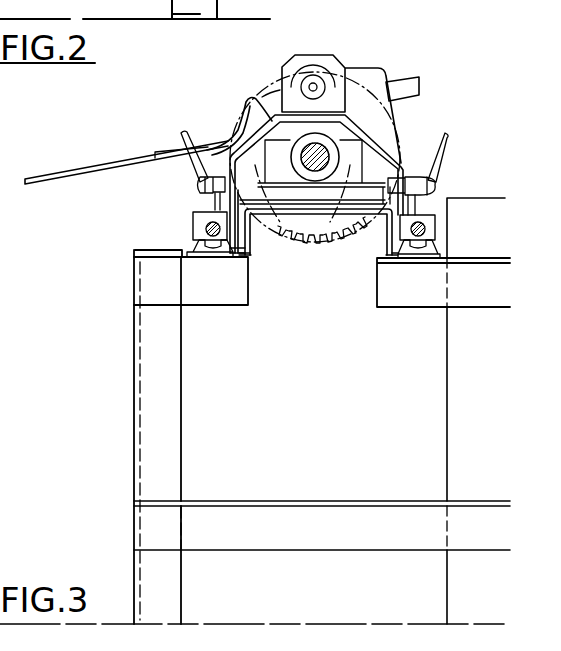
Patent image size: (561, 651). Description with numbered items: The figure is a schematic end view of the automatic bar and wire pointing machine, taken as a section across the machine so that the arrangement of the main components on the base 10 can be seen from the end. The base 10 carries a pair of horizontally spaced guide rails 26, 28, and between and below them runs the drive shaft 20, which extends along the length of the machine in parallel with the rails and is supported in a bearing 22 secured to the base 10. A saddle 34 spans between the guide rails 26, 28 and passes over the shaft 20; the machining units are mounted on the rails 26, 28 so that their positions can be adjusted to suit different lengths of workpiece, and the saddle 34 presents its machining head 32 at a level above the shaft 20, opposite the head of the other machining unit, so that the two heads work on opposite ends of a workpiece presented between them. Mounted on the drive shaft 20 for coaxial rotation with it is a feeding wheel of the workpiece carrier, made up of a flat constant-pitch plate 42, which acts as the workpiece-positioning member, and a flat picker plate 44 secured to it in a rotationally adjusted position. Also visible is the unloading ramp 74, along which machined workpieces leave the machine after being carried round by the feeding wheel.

The base 10 is at (152, 380).
The drive shaft 20 is at (258, 212).
The bearing 22 is at (347, 208).
The guide rail 26 is at (208, 225).
The guide rail 28 is at (425, 228).
The machining head 32 is at (320, 72).
The saddle 34 is at (372, 128).
The constant-pitch plate 42 is at (323, 234).
The picker plate 44 is at (307, 224).
The unloading ramp 74 is at (224, 146).